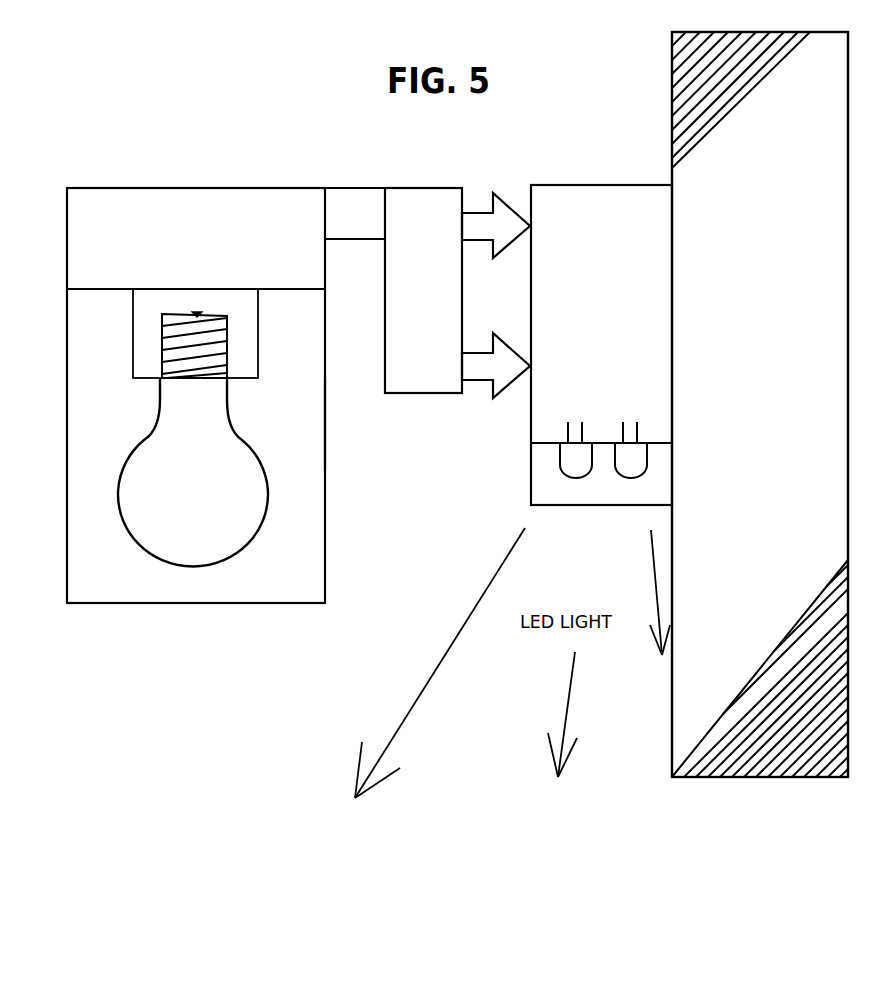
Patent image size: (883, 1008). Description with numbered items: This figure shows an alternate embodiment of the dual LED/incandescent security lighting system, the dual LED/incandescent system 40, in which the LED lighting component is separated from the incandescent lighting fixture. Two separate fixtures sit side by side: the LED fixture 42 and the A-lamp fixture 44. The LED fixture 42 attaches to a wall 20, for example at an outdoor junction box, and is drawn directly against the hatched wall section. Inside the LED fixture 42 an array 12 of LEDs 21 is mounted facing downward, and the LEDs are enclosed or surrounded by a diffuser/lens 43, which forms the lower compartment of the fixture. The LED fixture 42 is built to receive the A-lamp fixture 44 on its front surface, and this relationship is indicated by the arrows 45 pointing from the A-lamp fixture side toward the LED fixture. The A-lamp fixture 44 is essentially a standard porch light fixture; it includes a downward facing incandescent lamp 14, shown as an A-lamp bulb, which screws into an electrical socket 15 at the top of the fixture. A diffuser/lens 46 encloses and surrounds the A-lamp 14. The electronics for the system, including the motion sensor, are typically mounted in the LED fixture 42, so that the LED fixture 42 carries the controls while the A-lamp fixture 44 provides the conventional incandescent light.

The array of LEDs 12 is at (650, 485).
The incandescent lamp 14 is at (272, 498).
The electrical socket 15 is at (258, 349).
The wall 20 is at (672, 712).
The LEDs 21 is at (637, 422).
The dual LED/incandescent system 40 is at (160, 670).
The LED fixture 42 is at (601, 345).
The diffuser/lens 43 is at (522, 476).
The A-lamp fixture 44 is at (288, 178).
The arrows 45 is at (480, 214).
The diffuser/lens 46 is at (325, 425).